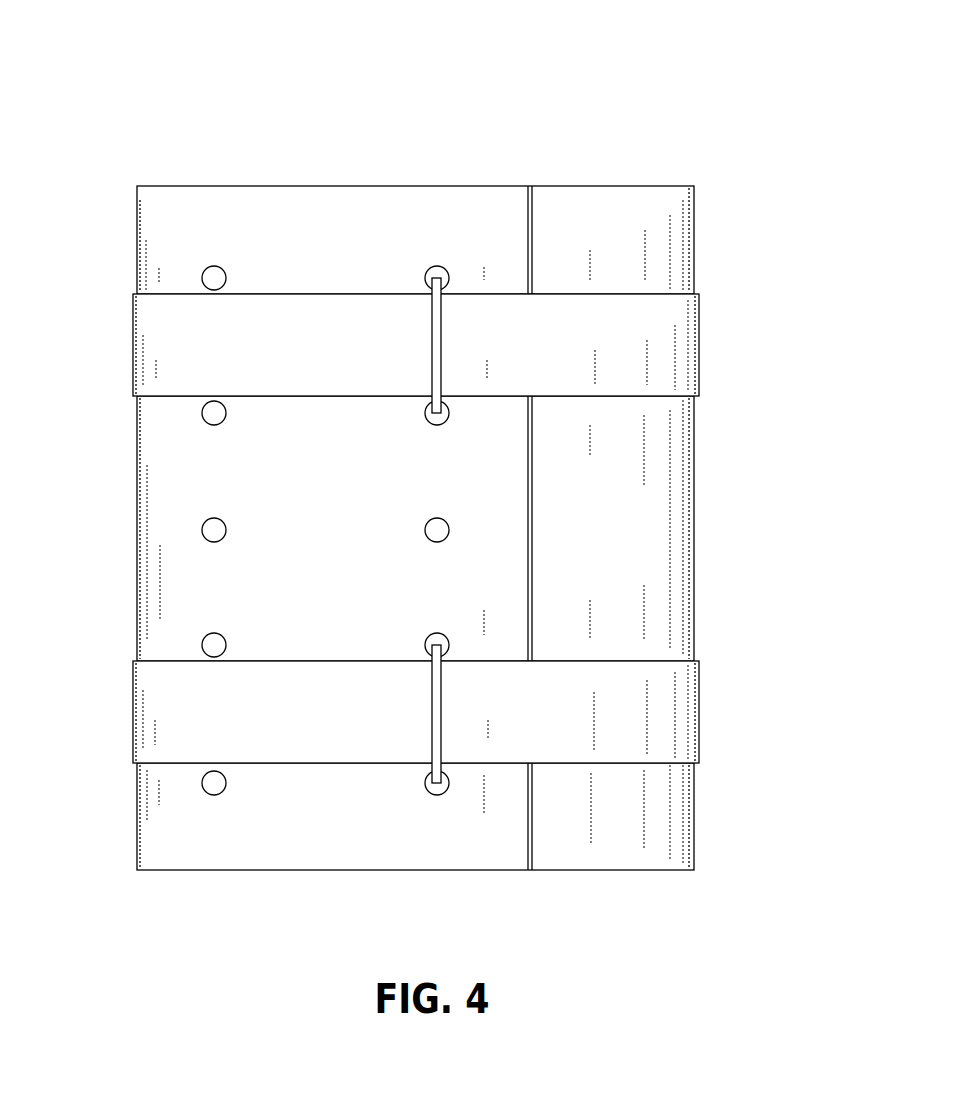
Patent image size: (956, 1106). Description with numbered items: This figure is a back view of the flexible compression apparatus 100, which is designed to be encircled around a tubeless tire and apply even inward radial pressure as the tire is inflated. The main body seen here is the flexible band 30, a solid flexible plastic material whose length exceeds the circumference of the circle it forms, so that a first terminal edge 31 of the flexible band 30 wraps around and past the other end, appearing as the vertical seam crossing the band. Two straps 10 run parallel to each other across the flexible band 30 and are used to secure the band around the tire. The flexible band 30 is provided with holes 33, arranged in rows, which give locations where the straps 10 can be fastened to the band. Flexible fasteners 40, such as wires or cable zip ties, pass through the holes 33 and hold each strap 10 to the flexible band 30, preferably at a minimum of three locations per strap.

The flexible compression apparatus 100 is at (463, 59).
The strap 10 is at (699, 344).
The flexible band 30 is at (694, 538).
The first terminal edge 31 is at (530, 248).
The holes 33 is at (202, 530).
The flexible fasteners 40 is at (433, 323).